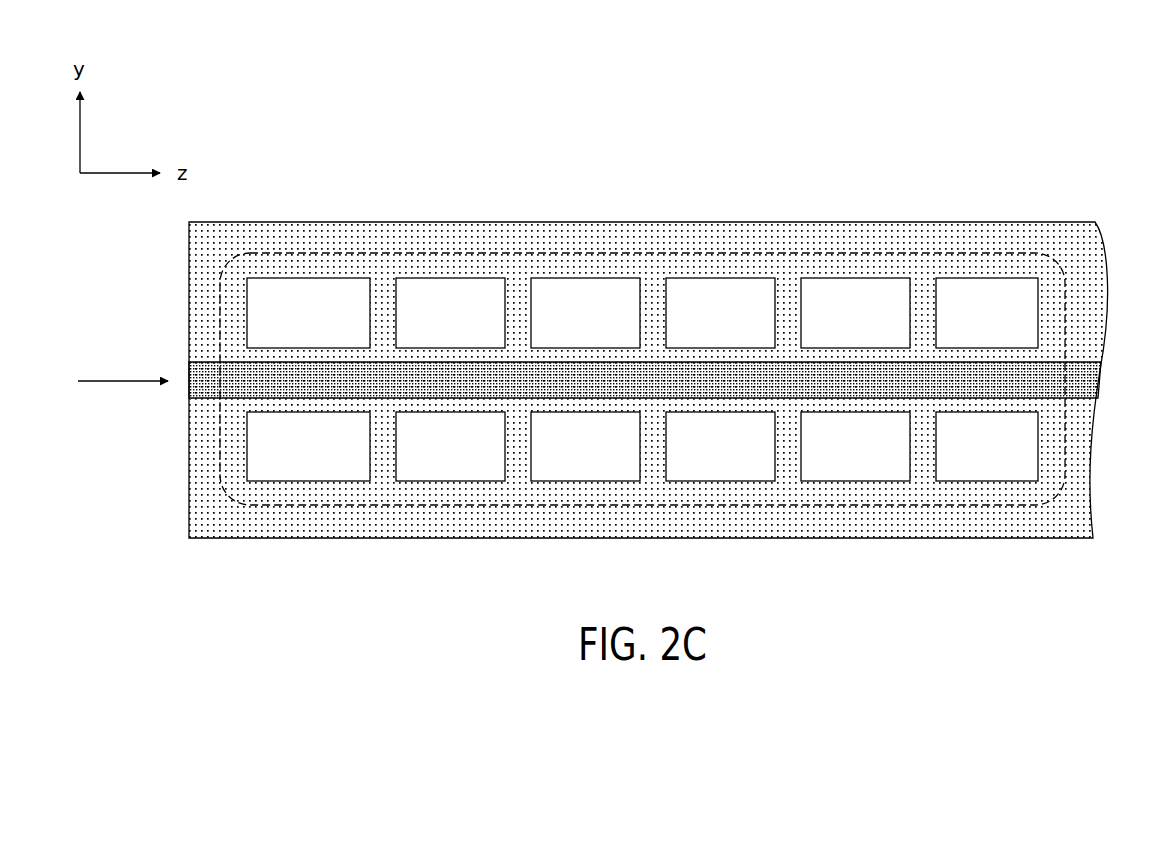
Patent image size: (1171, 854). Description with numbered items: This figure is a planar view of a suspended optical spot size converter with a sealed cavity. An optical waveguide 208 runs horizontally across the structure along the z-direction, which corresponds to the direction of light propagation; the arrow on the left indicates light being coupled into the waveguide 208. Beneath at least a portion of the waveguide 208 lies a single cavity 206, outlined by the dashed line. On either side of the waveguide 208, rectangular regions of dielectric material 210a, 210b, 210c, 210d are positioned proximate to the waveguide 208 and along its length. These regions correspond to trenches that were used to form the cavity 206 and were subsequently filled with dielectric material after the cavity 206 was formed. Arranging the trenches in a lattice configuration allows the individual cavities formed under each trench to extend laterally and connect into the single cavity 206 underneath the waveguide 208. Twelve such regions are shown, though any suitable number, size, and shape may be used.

The cavity 206 is at (862, 262).
The optical waveguide 208 is at (1078, 380).
The region of dielectric material 210a is at (308, 315).
The region of dielectric material 210b is at (450, 315).
The region of dielectric material 210c is at (307, 446).
The region of dielectric material 210d is at (450, 446).